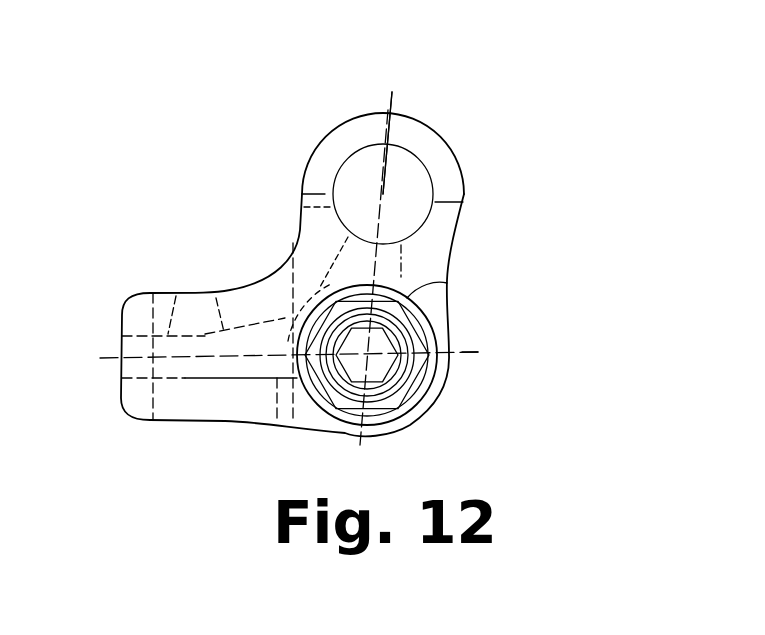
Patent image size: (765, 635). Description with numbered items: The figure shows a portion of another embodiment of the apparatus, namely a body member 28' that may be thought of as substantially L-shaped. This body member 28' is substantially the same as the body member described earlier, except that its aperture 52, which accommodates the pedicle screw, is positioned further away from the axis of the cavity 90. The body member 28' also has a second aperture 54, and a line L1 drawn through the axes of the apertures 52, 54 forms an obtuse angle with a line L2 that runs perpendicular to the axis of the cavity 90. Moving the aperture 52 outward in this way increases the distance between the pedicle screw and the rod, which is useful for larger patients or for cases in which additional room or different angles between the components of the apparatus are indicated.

The body member 28' is at (352, 268).
The aperture 52 is at (426, 166).
The aperture 54 is at (447, 283).
The cavity 90 is at (153, 385).
The line L1 is at (392, 92).
The line L2 is at (470, 358).